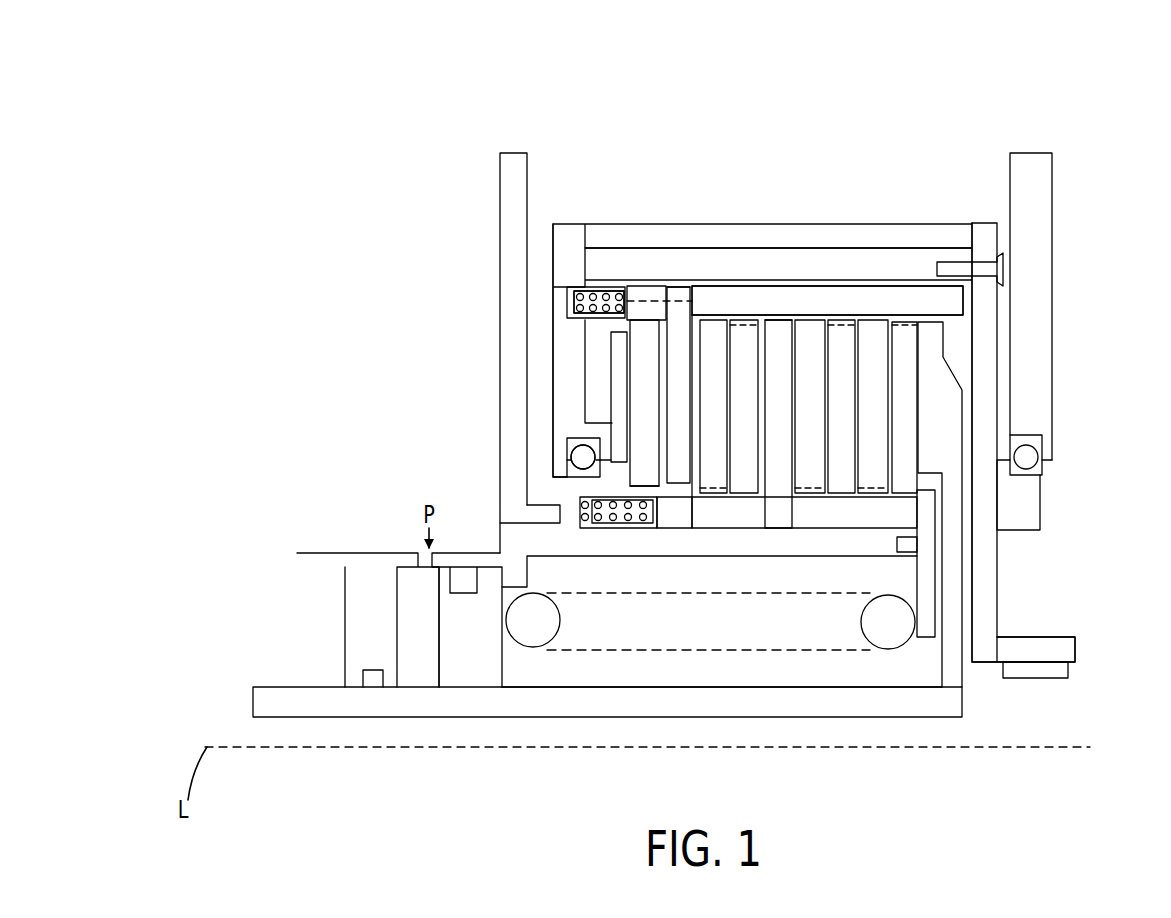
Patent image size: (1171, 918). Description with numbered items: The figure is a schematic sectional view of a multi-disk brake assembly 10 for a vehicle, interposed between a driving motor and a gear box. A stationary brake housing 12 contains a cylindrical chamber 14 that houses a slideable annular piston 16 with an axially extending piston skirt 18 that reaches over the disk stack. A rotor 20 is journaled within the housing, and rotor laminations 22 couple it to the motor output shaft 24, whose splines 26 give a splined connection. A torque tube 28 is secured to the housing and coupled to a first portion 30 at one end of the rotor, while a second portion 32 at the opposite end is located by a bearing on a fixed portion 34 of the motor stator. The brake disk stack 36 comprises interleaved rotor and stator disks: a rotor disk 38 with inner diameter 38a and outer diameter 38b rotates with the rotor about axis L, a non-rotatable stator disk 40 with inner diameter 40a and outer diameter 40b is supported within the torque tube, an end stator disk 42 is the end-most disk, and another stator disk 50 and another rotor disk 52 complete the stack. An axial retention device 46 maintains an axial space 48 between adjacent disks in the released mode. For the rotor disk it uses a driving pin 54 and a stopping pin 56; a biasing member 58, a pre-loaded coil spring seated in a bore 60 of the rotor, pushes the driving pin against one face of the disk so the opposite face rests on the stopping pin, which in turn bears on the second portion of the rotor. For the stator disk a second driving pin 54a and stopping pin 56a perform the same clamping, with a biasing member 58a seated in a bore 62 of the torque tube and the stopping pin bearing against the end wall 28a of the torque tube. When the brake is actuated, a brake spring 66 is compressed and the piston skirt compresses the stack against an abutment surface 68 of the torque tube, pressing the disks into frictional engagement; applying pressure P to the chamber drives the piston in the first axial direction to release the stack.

The brake assembly 10 is at (308, 126).
The brake housing 12 is at (513, 168).
The cylindrical chamber 14 is at (412, 673).
The piston 16 is at (473, 668).
The piston skirt 18 is at (833, 703).
The rotor 20 is at (558, 295).
The rotor laminations 22 is at (945, 233).
The output shaft 24 is at (1062, 652).
The splines 26 is at (1050, 670).
The torque tube 28 is at (530, 486).
The end wall 28a is at (1043, 457).
The first portion 30 is at (560, 425).
The second portion 32 is at (983, 343).
The fixed portion 34 is at (1038, 215).
The brake disk stack 36 is at (596, 363).
The rotor disk 38 is at (640, 398).
The inner diameter 38a is at (698, 518).
The outer diameter 38b is at (670, 287).
The stator disk 40 is at (778, 482).
The inner diameter 40a is at (876, 516).
The outer diameter 40b is at (780, 322).
The end stator disk 42 is at (673, 413).
The axial retention device 46 is at (743, 355).
The axial space 48 is at (692, 338).
The stator disk 50 is at (715, 335).
The rotor disk 52 is at (787, 280).
The driving pin 54 is at (648, 287).
The driving pin 54a is at (678, 487).
The stopping pin 56 is at (947, 303).
The stopping pin 56a is at (903, 518).
The biasing member 58 is at (572, 311).
The biasing member 58a is at (560, 513).
The bore 60 is at (568, 288).
The bore 62 is at (580, 507).
The brake spring 66 is at (745, 630).
The abutment surface 68 is at (600, 427).